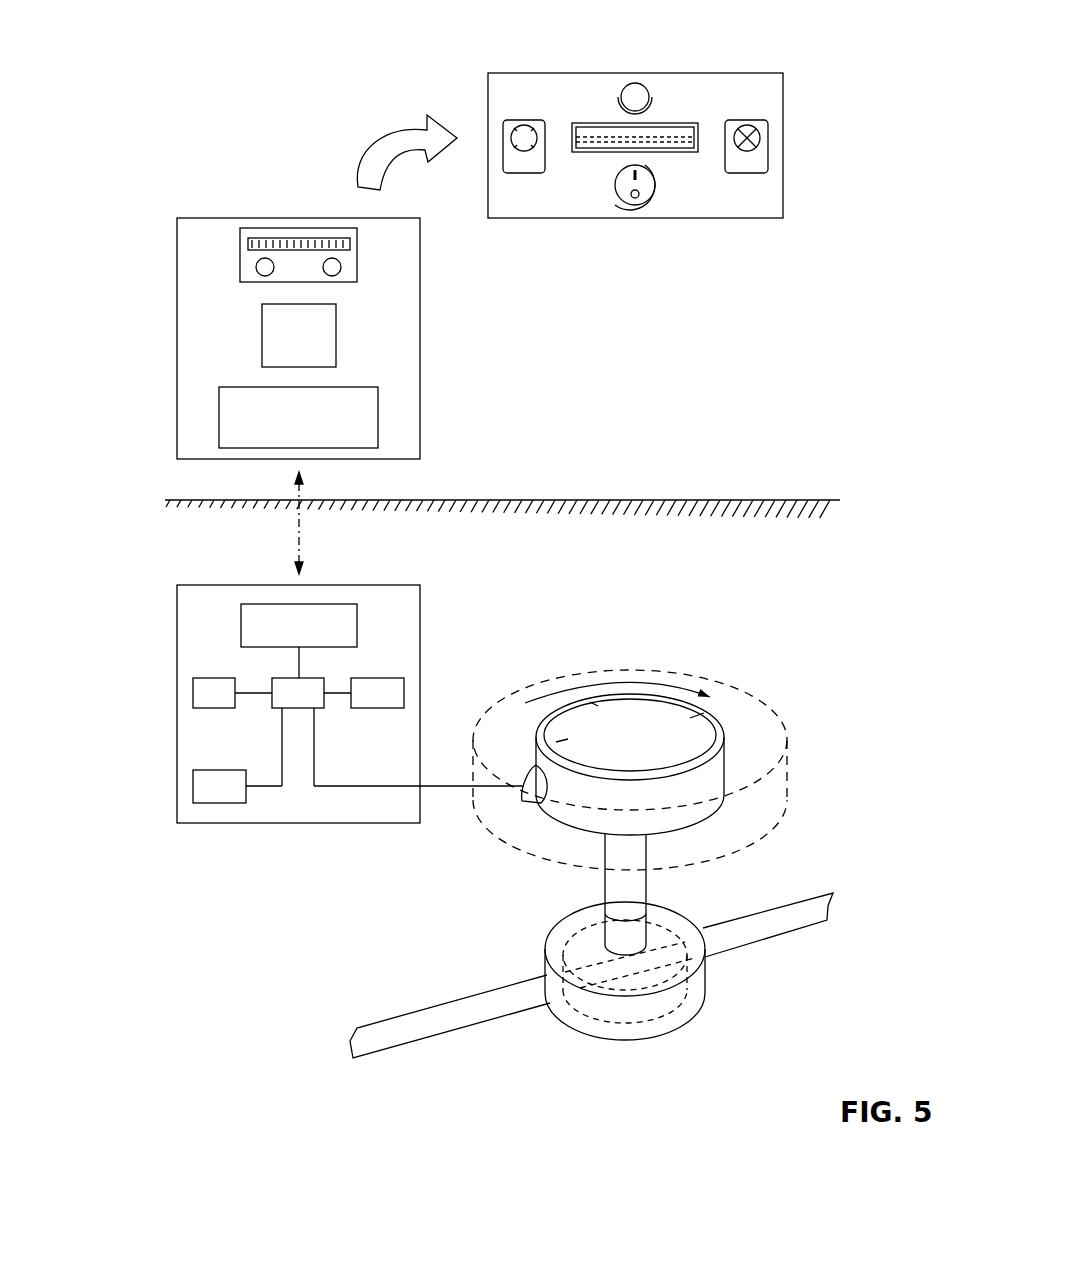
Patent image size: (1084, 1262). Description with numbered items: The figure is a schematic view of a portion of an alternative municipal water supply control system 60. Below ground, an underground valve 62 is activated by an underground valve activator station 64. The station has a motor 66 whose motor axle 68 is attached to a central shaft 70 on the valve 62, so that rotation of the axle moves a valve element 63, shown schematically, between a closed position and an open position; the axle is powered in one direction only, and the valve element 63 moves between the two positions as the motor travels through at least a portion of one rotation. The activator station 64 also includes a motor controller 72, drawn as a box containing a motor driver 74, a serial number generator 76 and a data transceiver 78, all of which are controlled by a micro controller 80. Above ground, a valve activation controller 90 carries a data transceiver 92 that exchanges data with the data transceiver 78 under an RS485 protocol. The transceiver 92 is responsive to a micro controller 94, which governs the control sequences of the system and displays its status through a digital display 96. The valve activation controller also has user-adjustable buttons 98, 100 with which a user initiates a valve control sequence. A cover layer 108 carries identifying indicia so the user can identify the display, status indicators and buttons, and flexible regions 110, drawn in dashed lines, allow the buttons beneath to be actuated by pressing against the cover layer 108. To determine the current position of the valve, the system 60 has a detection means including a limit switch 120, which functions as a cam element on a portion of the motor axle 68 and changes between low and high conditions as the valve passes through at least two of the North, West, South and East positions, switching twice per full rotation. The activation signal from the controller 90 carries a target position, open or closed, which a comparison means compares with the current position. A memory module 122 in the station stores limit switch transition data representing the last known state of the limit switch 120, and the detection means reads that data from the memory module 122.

The municipal water supply control system 60 is at (782, 415).
The underground valve 62 is at (718, 963).
The valve element 63 is at (603, 1007).
The underground valve activator station 64 is at (557, 650).
The motor 66 is at (793, 662).
The motor axle 68 is at (650, 853).
The central shaft 70 is at (628, 932).
The motor controller 72 is at (287, 825).
The motor driver 74 is at (390, 688).
The serial number generator 76 is at (215, 693).
The data transceiver 78 is at (257, 624).
The micro controller 80 is at (320, 688).
The valve activation controller 90 is at (190, 185).
The data transceiver 92 is at (358, 427).
The micro controller 94 is at (322, 330).
The digital display 96 is at (350, 276).
The user-adjustable button 98 is at (645, 195).
The user-adjustable button 100 is at (642, 98).
The cover layer 108 is at (763, 197).
The flexible regions 110 is at (760, 125).
The limit switch 120 is at (523, 800).
The memory module 122 is at (210, 783).